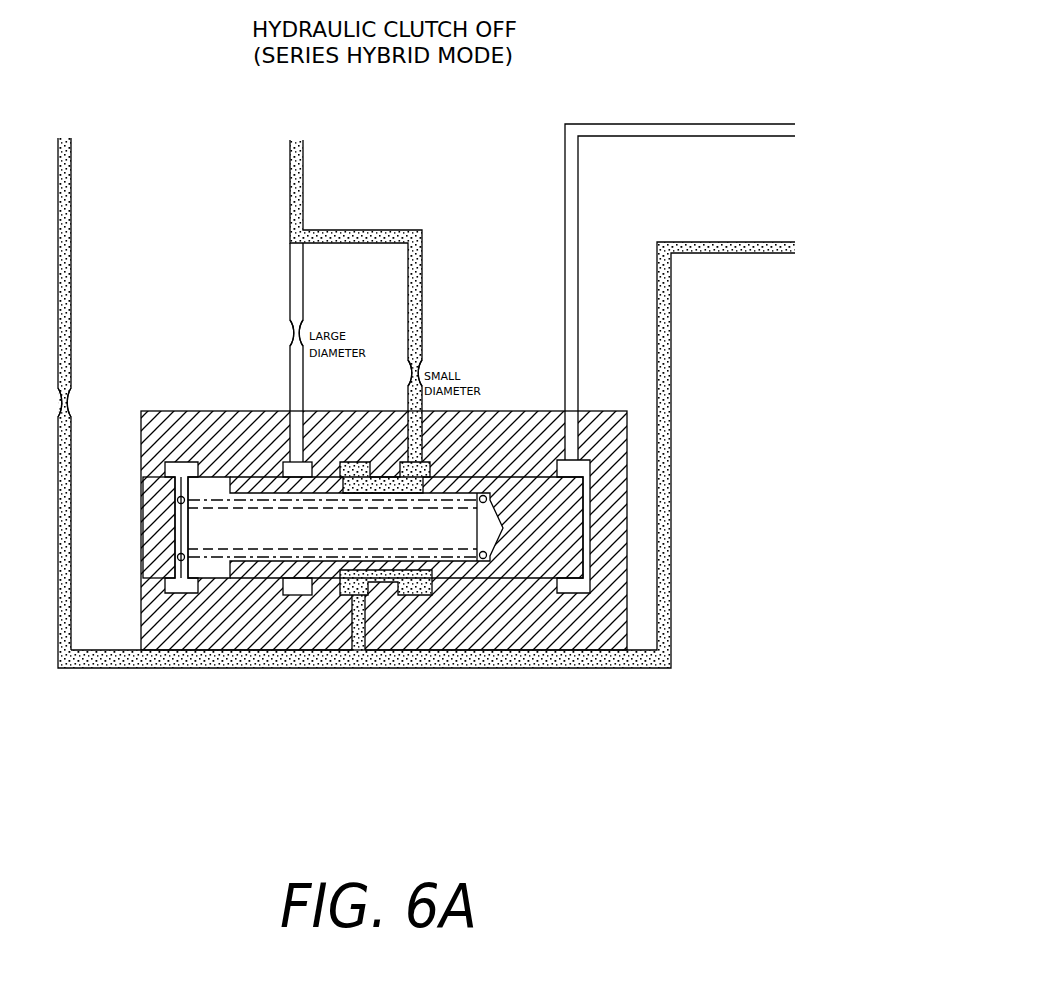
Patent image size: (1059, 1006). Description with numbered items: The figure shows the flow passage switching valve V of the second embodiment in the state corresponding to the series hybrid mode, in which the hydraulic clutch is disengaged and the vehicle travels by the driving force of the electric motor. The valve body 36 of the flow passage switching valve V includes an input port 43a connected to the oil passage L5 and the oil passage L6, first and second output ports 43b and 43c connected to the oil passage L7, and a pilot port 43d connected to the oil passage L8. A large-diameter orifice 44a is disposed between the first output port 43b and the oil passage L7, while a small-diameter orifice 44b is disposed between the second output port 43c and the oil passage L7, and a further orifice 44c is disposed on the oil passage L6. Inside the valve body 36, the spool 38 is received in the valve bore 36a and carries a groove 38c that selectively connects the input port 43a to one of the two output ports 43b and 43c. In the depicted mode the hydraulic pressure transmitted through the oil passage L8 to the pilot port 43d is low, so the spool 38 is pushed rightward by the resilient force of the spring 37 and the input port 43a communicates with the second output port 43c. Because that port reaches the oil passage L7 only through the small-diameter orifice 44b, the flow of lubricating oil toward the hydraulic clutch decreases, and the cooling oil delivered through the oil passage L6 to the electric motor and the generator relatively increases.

The oil passage L5 is at (672, 460).
The oil passage L6 is at (71, 272).
The oil passage L7 is at (303, 198).
The oil passage L8 is at (571, 273).
The flow passage switching valve V is at (223, 410).
The valve body 36 is at (492, 411).
The valve bore of housing 36a is at (518, 477).
The spring 37 is at (181, 462).
The spool 38 is at (553, 541).
The groove 38c is at (418, 583).
The input port 43a is at (365, 596).
The first output port 43b is at (283, 462).
The second output port 43c is at (403, 465).
The pilot port 43d is at (603, 460).
The large-diameter orifice 44a is at (297, 340).
The small-diameter orifice 44b is at (418, 367).
The orifice 44c is at (69, 401).